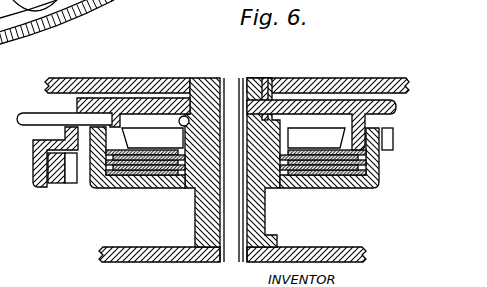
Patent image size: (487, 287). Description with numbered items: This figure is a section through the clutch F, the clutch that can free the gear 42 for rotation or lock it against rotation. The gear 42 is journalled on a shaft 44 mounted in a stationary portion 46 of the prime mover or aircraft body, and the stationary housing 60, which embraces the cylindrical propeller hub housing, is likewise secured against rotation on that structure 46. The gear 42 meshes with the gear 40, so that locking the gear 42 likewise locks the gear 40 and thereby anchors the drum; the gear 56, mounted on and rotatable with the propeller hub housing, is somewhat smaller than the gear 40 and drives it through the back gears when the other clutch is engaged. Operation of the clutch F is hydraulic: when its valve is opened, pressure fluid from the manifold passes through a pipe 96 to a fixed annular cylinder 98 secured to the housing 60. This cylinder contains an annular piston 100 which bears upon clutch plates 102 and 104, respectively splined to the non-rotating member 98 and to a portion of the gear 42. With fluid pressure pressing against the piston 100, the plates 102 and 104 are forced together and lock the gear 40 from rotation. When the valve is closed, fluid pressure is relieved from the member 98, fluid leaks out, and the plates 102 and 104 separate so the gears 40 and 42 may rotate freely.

The gear 40 is at (36, 184).
The gear 42 is at (387, 152).
The shaft 44 is at (238, 86).
The stationary portion 46 is at (227, 73).
The gear 56 is at (72, 177).
The stationary housing 60 is at (190, 80).
The pipe 96 is at (30, 114).
The fixed annular cylinder 98 is at (139, 99).
The annular piston 100 is at (303, 146).
The clutch plates 102 is at (284, 186).
The clutch plates 104 is at (355, 173).
The clutch F is at (160, 194).